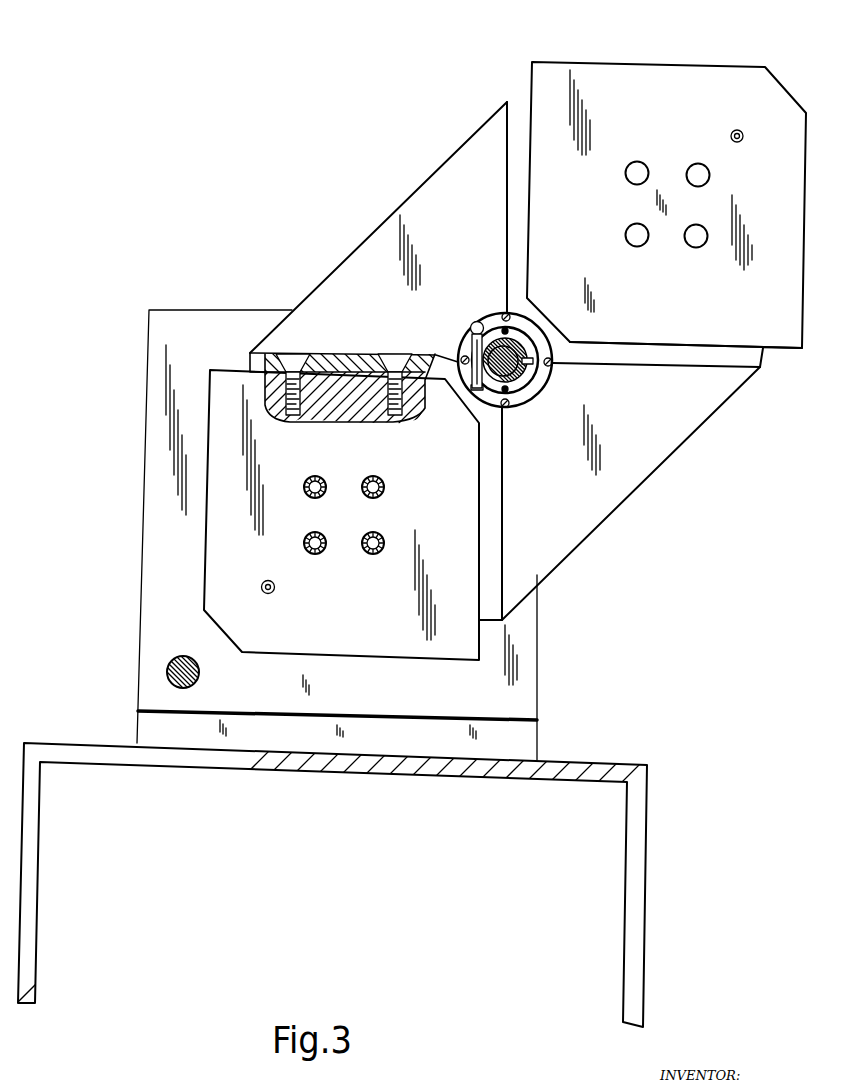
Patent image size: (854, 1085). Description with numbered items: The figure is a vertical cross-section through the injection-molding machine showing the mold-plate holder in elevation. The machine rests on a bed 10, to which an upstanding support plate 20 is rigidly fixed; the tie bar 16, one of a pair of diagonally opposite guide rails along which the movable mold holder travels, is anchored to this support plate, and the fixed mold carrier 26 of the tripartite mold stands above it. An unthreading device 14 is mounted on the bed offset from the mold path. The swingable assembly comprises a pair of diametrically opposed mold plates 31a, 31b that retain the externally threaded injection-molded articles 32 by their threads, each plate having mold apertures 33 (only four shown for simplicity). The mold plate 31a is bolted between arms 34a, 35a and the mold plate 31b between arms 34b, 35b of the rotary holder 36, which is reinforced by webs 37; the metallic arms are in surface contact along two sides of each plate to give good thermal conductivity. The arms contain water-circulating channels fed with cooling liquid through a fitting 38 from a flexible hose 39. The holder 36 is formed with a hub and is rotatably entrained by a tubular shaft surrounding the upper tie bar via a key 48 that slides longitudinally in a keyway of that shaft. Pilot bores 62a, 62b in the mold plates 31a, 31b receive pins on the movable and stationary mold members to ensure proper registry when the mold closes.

The bed 10 is at (648, 765).
The unthreading device 14 is at (383, 353).
The tie bar 16 is at (200, 675).
The support plate 20 is at (146, 725).
The fixed mold carrier 26 is at (150, 390).
The mold plate 31a is at (653, 63).
The mold plate 31b is at (387, 647).
The injection-molded articles 32 is at (383, 494).
The mold aperture 33 is at (647, 267).
The arm 34a is at (525, 231).
The arm 34b is at (500, 478).
The arm 35a is at (703, 352).
The arm 35b is at (438, 356).
The rotary holder 36 is at (566, 369).
The web 37 is at (627, 482).
The fitting 38 is at (476, 321).
The flexible hose 39 is at (470, 392).
The key 48 is at (533, 367).
The pilot bore 62a is at (745, 141).
The pilot bore 62b is at (274, 592).